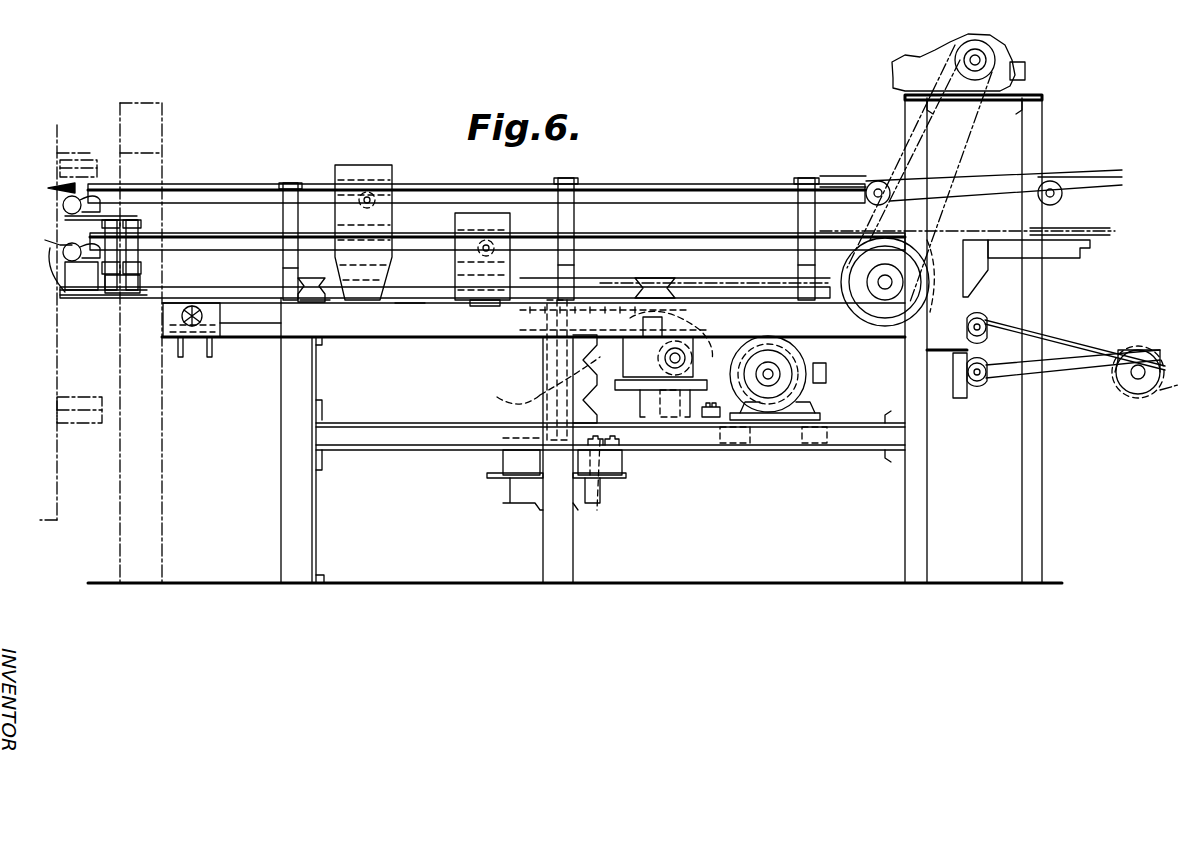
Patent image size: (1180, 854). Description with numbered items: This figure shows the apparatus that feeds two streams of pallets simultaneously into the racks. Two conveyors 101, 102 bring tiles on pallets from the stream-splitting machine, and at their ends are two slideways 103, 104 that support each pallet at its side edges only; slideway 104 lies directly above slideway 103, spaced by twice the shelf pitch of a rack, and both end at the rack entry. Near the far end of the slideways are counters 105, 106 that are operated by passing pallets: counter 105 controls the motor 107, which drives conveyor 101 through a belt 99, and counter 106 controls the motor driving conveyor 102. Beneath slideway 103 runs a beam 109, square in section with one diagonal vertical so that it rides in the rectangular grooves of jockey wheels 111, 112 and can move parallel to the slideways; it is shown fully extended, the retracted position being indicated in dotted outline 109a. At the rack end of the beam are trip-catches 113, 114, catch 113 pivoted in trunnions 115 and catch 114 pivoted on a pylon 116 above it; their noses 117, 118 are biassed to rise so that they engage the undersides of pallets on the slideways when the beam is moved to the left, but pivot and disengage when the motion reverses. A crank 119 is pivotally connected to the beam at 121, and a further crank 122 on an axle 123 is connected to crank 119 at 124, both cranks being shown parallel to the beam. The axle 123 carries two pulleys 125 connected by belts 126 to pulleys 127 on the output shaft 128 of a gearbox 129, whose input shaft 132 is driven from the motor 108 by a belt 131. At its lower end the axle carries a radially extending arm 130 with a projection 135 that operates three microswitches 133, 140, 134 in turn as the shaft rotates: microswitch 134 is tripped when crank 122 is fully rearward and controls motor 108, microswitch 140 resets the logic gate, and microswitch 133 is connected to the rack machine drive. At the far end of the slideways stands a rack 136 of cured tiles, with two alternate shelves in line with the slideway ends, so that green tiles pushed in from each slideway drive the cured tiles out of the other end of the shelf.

The belt 99 is at (977, 120).
The conveyor 101 is at (1067, 222).
The conveyor 102 is at (1058, 174).
The slideway 103 is at (728, 243).
The slideway 104 is at (693, 186).
The counter 105 is at (497, 238).
The counter 106 is at (383, 197).
The motor 107 is at (893, 78).
The motor 108 is at (803, 364).
The beam 109 is at (627, 277).
The shaft axis 109a is at (693, 278).
The jockey wheel 111 is at (313, 290).
The jockey wheel 112 is at (203, 300).
The trip-catch 113 is at (73, 263).
The trip-catch 114 is at (137, 218).
The trunnions 115 is at (78, 265).
The pylon 116 is at (147, 266).
The nose 117 is at (55, 248).
The nose 118 is at (60, 190).
The crank 119 is at (422, 303).
The pivot connection 121 is at (352, 307).
The crank 122 is at (523, 310).
The axle 123 is at (497, 397).
The connection 124 is at (490, 305).
The pulleys 125 is at (575, 310).
The belts 126 is at (545, 388).
The pulleys 127 is at (760, 357).
The output shaft 128 is at (660, 313).
The gearbox 129 is at (650, 377).
The arm 130 is at (508, 452).
The belt 131 is at (760, 337).
The input shaft 132 is at (680, 378).
The microswitch 133 is at (601, 487).
The microswitch 134 is at (623, 453).
The projection 135 is at (500, 437).
The rack 136 is at (62, 180).
The microswitch 140 is at (617, 473).